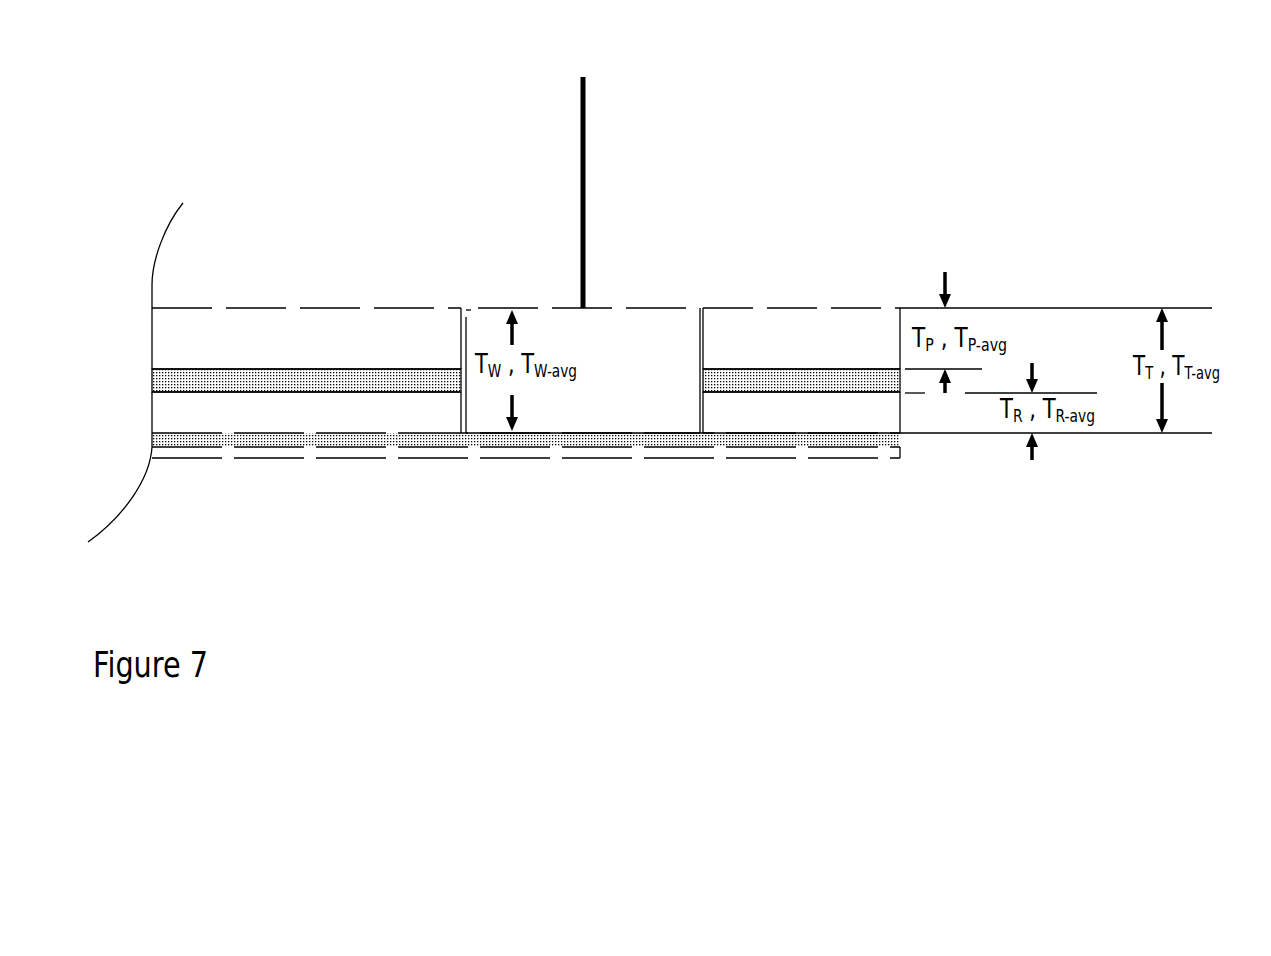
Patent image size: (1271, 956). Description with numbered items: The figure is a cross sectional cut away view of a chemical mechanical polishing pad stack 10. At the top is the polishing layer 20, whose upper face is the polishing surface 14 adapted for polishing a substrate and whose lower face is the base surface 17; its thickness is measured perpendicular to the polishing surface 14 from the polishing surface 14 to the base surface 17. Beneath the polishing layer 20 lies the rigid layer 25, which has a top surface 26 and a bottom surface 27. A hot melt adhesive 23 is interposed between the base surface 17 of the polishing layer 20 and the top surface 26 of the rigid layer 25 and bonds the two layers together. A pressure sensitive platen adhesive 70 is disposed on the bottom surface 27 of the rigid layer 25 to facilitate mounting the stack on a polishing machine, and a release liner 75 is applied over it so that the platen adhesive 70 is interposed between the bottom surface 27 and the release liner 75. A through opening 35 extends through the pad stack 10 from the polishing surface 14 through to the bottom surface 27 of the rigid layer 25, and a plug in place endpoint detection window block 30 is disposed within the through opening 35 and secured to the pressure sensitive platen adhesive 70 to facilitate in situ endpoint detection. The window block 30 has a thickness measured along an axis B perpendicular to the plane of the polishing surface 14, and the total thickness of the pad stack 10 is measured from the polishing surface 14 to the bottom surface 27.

The chemical mechanical polishing pad stack 10 is at (246, 159).
The polishing surface 14 is at (288, 308).
The base surface 17 is at (185, 368).
The polishing layer 20 is at (350, 337).
The hot melt adhesive 23 is at (375, 380).
The rigid layer 25 is at (303, 410).
The top surface of the rigid layer 26 is at (413, 393).
The bottom surface of the rigid layer 27 is at (850, 433).
The plug in place endpoint detection window block 30 is at (625, 327).
The through opening 35 is at (466, 320).
The pressure sensitive platen adhesive 70 is at (453, 442).
The release liner 75 is at (530, 453).
The axis B is at (592, 113).